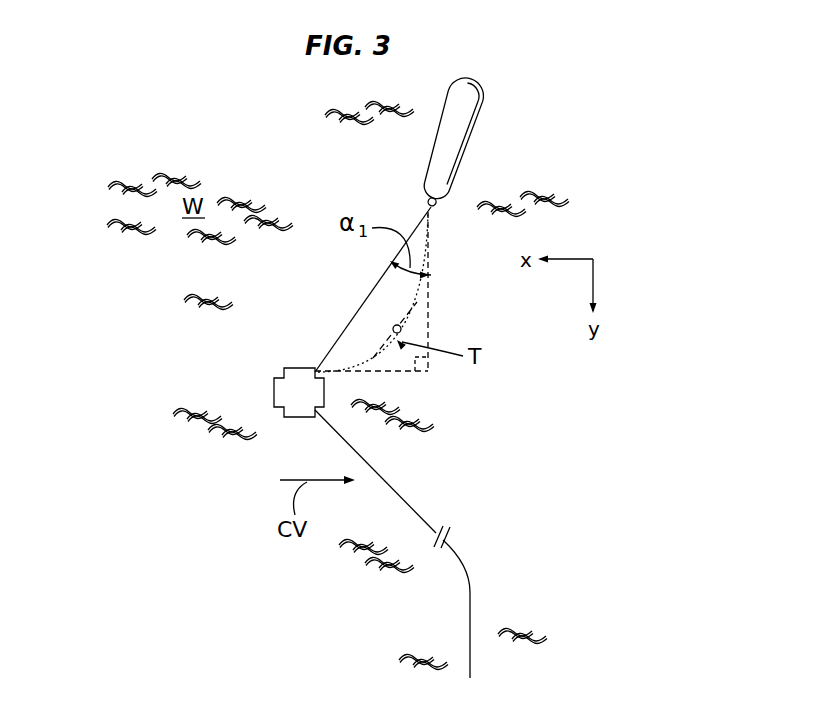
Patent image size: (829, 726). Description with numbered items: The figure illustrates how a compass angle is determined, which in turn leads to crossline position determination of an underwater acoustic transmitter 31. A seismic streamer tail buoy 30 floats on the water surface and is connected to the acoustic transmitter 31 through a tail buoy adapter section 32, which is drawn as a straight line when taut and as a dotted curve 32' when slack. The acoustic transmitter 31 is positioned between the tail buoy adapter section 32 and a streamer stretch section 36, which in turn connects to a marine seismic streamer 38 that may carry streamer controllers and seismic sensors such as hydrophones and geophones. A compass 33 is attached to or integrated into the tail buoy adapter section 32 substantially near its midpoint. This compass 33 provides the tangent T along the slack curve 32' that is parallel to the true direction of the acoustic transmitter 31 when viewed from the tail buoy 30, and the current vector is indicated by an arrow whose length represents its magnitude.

The seismic streamer tail buoy 30 is at (470, 120).
The underwater acoustic transmitter 31 is at (284, 371).
The tail buoy adapter section 32 is at (368, 289).
The tail buoy adapter section in slack condition 32' is at (351, 292).
The compass 33 is at (403, 330).
The streamer stretch section 36 is at (401, 494).
The marine seismic streamer 38 is at (470, 615).